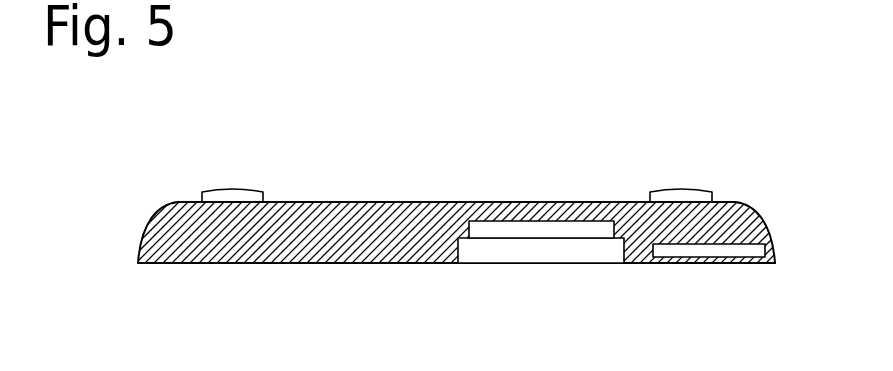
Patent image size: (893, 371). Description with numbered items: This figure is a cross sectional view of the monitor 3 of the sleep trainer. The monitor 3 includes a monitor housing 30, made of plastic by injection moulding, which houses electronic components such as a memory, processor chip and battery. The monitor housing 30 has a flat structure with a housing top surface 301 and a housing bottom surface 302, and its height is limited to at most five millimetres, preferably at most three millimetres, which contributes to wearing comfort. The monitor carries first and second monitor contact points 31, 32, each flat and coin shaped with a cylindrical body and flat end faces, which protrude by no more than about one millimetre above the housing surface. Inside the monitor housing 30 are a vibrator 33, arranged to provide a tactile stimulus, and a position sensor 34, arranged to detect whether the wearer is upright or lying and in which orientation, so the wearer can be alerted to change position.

The monitor 3 is at (508, 121).
The monitor housing 30 is at (225, 242).
The housing top surface 301 is at (365, 202).
The housing bottom surface 302 is at (348, 263).
The first monitor contact point 31 is at (233, 197).
The second monitor contact point 32 is at (693, 197).
The vibrator 33 is at (533, 248).
The position sensor 34 is at (710, 250).